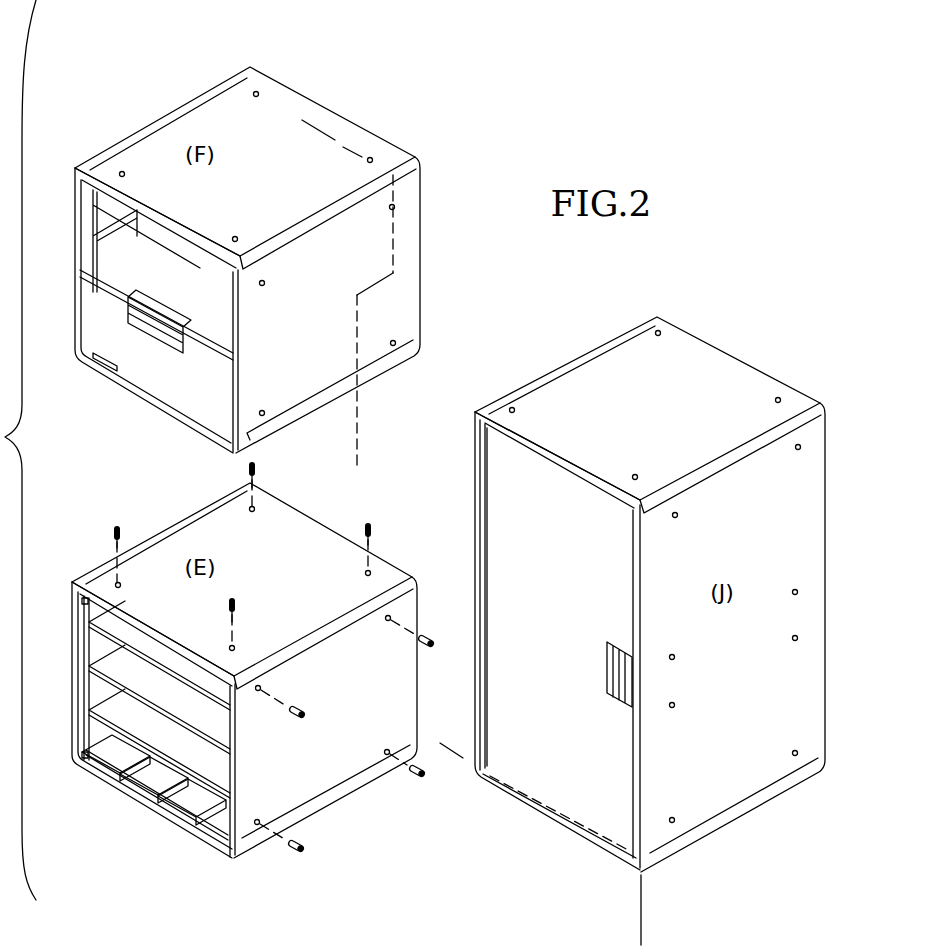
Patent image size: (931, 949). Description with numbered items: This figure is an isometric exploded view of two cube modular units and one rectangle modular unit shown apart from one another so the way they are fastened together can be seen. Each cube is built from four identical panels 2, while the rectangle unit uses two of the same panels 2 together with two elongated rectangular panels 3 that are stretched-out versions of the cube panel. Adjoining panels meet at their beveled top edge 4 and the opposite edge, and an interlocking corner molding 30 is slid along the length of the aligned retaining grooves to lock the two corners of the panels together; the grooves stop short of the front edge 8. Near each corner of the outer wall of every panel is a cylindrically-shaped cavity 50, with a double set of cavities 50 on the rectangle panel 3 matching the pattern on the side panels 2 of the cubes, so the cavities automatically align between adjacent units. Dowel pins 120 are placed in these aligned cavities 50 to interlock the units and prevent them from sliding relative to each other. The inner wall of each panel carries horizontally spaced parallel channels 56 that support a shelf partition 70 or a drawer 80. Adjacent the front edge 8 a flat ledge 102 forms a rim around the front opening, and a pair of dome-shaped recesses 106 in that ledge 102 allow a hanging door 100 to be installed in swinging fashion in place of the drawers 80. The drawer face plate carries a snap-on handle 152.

The panel 2 is at (72, 194).
The elongated rectangular panel 3 is at (466, 469).
The top edge 4 is at (324, 136).
The front edge 8 is at (458, 758).
The corner molding 30 is at (190, 100).
The cylindrically-shaped cavity 50 is at (121, 171).
The channel 56 is at (148, 798).
The shelf partition 70 is at (193, 763).
The drawer 80 is at (147, 377).
The hanging door 100 is at (578, 754).
The ledge 102 is at (167, 817).
The dome-shaped recess 106 is at (73, 580).
The dowel pin 120 is at (246, 468).
The snap-on handle 152 is at (606, 672).